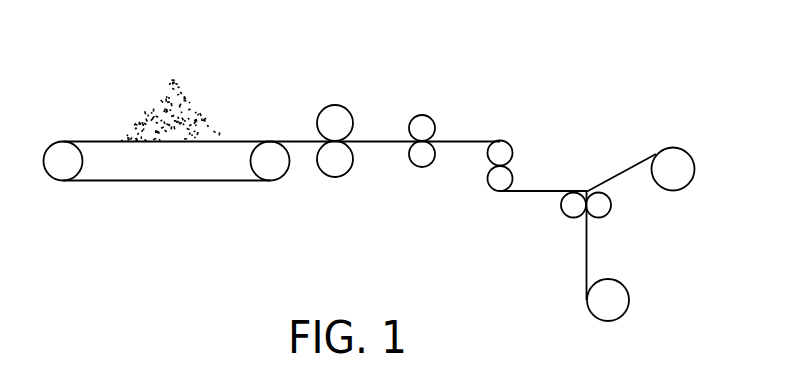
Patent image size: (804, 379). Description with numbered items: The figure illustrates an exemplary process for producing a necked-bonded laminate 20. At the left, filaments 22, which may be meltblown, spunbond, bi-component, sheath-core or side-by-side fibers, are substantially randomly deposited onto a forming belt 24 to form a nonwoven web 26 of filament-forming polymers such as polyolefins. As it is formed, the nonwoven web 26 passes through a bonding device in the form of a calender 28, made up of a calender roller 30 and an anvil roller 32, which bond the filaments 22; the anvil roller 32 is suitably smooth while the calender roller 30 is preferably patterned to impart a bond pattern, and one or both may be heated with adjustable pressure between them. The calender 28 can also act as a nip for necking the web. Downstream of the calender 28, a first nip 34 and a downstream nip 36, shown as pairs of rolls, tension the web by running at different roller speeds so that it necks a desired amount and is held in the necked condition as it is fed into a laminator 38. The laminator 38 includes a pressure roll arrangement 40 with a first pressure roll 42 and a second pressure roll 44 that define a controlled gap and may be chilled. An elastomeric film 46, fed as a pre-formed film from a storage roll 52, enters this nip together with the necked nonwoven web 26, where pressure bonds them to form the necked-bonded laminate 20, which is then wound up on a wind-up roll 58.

The necked-bonded laminate 20 is at (588, 258).
The filaments 22 is at (197, 92).
The forming belt 24 is at (173, 181).
The nonwoven web 26 is at (297, 140).
The calender 28 is at (365, 136).
The calender roller 30 is at (330, 105).
The anvil roller 32 is at (340, 177).
The first nip 34 is at (440, 122).
The downstream nip 36 is at (517, 162).
The laminator 38 is at (587, 182).
The pressure roll arrangement 40 is at (581, 236).
The first pressure roll 42 is at (560, 205).
The second pressure roll 44 is at (611, 207).
The elastomeric film 46 is at (633, 163).
The storage roll 52 is at (692, 157).
The wind-up roll 58 is at (630, 298).